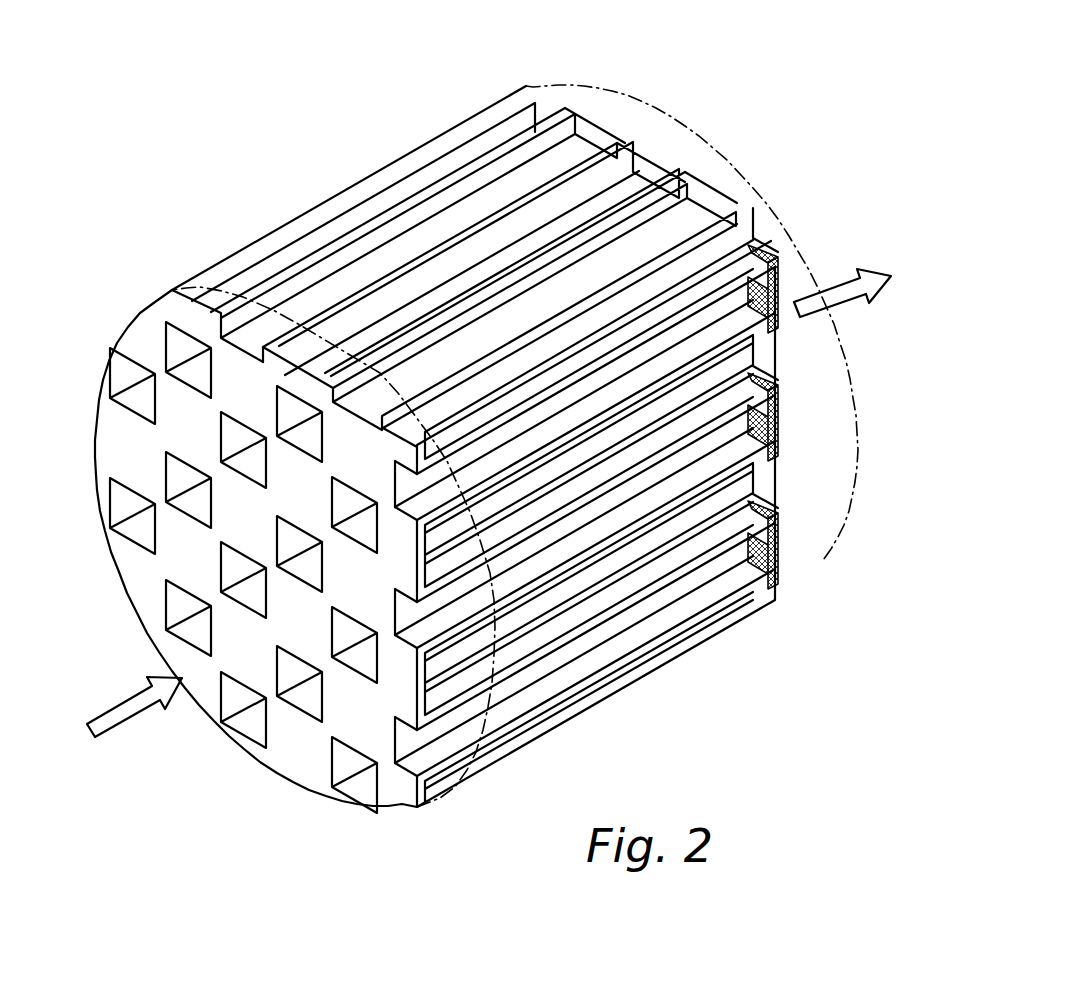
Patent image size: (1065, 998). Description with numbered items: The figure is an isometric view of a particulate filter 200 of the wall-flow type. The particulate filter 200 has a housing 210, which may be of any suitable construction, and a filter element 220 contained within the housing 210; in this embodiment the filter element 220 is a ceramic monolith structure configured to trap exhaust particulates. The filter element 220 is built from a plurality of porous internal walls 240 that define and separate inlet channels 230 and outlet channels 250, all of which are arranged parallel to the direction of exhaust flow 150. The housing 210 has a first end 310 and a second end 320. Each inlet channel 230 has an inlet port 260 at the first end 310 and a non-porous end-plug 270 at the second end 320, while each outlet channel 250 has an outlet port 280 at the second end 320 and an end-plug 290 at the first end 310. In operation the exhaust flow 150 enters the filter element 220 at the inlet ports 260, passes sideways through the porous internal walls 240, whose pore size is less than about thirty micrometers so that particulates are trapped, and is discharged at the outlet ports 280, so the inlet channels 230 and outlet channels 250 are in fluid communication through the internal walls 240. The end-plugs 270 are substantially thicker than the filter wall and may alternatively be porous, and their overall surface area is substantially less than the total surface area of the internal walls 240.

The exhaust flow 150 is at (838, 292).
The particulate filter 200 is at (773, 162).
The housing 210 is at (638, 90).
The filter element 220 is at (315, 200).
The inlet channels 230 is at (362, 783).
The porous internal walls 240 is at (612, 608).
The outlet channels 250 is at (772, 366).
The inlet port 260 is at (178, 350).
The end-plug 270 is at (787, 236).
The outlet port 280 is at (782, 481).
The end-plug 290 is at (142, 571).
The first end 310 is at (270, 766).
The second end 320 is at (664, 156).